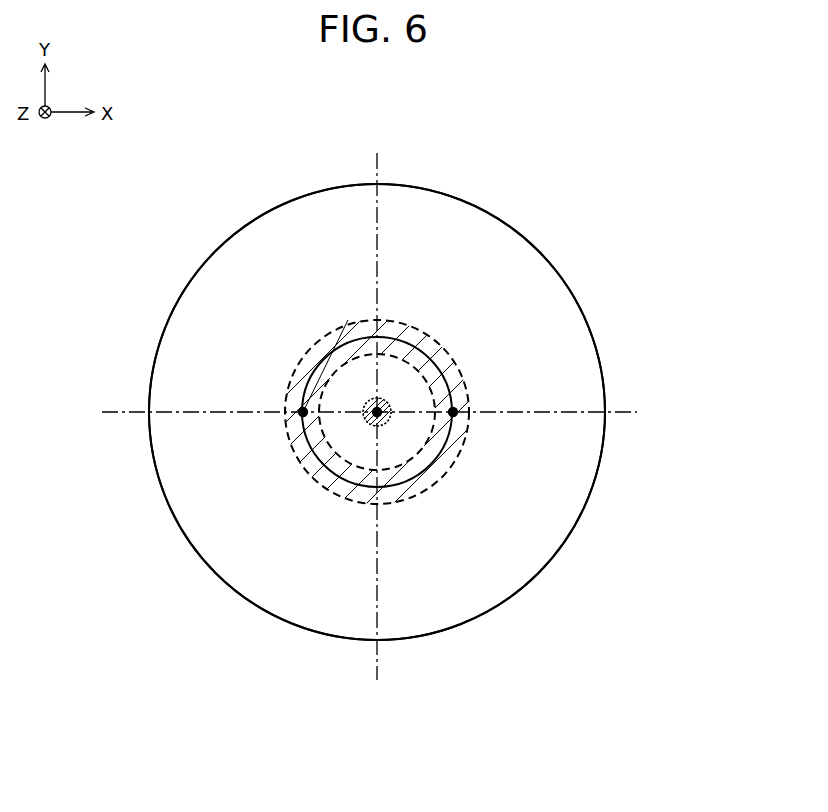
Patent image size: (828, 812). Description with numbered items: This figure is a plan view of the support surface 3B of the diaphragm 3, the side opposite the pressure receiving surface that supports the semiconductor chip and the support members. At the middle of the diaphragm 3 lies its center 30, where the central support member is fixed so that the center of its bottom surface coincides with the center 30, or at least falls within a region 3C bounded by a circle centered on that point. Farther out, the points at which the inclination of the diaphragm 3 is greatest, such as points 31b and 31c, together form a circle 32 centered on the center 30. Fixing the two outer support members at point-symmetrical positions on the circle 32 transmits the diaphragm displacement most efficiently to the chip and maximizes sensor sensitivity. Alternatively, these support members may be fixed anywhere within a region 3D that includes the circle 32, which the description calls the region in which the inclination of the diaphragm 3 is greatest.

The diaphragm 3 is at (602, 368).
The support surface 3B is at (568, 318).
The region 3C is at (382, 406).
The region 3D is at (293, 390).
The center 30 is at (378, 408).
The point 31b is at (303, 412).
The point 31c is at (453, 412).
The circle 32 is at (307, 352).